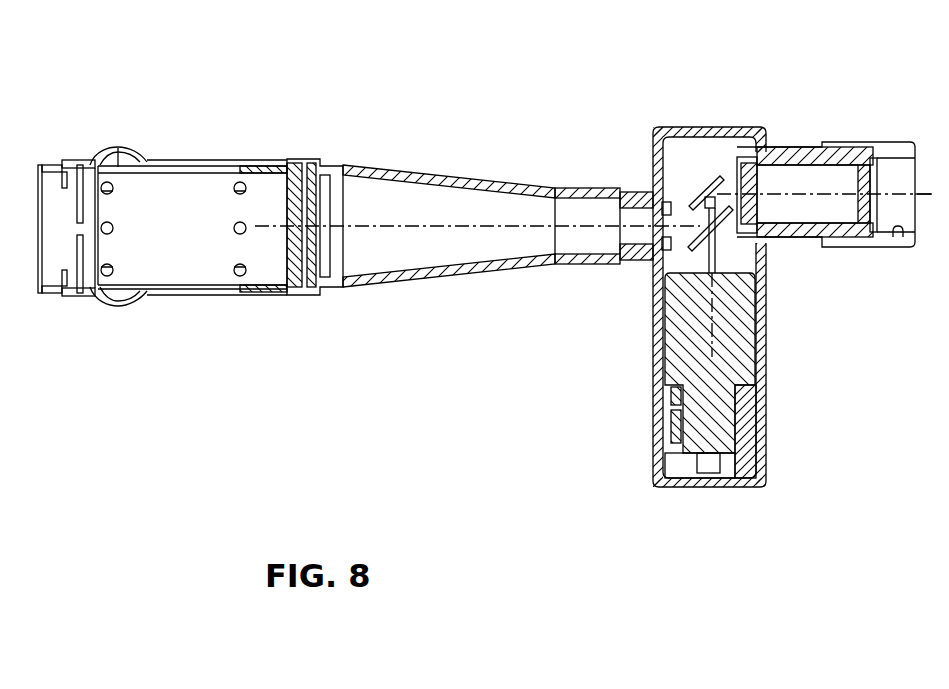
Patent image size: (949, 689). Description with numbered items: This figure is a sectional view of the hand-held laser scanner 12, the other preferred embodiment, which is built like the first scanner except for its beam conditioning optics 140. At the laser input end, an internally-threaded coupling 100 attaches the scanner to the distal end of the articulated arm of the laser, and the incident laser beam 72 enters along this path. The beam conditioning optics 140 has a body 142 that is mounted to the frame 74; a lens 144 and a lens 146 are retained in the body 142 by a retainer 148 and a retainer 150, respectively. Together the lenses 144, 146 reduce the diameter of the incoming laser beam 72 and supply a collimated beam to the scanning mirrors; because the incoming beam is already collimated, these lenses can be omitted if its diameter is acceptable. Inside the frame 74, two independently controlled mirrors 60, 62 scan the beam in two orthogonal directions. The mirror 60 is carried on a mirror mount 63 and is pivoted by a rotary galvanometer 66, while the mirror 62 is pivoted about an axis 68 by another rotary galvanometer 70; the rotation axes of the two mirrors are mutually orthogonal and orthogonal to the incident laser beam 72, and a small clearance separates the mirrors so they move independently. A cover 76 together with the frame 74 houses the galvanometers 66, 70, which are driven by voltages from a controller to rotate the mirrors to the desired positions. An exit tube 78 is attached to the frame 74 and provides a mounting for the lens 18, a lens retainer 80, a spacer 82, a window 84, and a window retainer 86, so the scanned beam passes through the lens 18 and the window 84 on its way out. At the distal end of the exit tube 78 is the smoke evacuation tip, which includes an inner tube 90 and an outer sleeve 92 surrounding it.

The laser scanner 12 is at (409, 122).
The lens 18 is at (330, 245).
The mirror 60 is at (617, 215).
The mirror 62 is at (700, 190).
The mirror mount 63 is at (733, 215).
The rotary galvanometer 66 is at (757, 357).
The axis 68 is at (700, 196).
The rotary galvanometer 70 is at (712, 196).
The incident laser beam 72 is at (933, 205).
The frame 74 is at (768, 443).
The cover 76 is at (655, 463).
The exit tube 78 is at (463, 275).
The lens retainer 80 is at (308, 290).
The spacer 82 is at (323, 160).
The window 84 is at (330, 245).
The window retainer 86 is at (283, 290).
The inner tube 90 is at (118, 157).
The outer sleeve 92 is at (203, 160).
The internally-threaded coupling 100 is at (907, 237).
The beam conditioning optics 140 is at (837, 142).
The body 142 is at (792, 147).
The lens 144 is at (900, 155).
The lens 146 is at (760, 207).
The retainer 148 is at (866, 165).
The retainer 150 is at (745, 157).